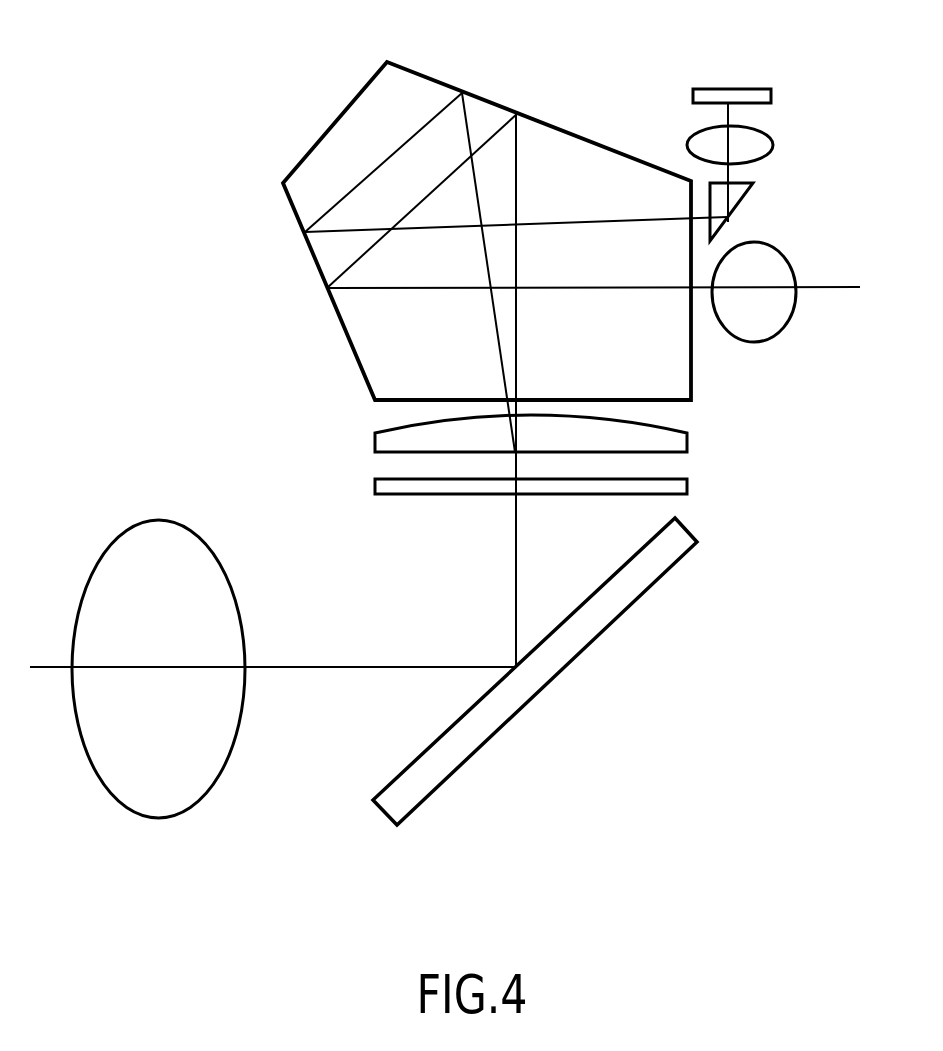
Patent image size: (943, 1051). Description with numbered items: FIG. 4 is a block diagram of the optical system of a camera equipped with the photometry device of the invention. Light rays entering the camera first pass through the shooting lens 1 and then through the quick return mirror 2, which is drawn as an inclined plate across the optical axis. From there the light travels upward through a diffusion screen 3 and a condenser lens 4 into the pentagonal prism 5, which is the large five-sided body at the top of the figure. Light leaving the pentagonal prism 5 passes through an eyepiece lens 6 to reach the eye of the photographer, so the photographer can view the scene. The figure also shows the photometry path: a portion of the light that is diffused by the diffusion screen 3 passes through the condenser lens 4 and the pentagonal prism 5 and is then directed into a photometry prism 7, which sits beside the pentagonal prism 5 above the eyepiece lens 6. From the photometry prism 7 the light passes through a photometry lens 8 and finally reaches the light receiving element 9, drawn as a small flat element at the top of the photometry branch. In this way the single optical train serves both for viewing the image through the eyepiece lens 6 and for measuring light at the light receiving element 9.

The shooting lens 1 is at (193, 802).
The quick return mirror 2 is at (508, 720).
The diffusion screen 3 is at (687, 487).
The condenser lens 4 is at (687, 440).
The pentagonal prism 5 is at (460, 90).
The eyepiece lens 6 is at (797, 305).
The photometry prism 7 is at (748, 198).
The photometry lens 8 is at (773, 139).
The light receiving element 9 is at (739, 89).